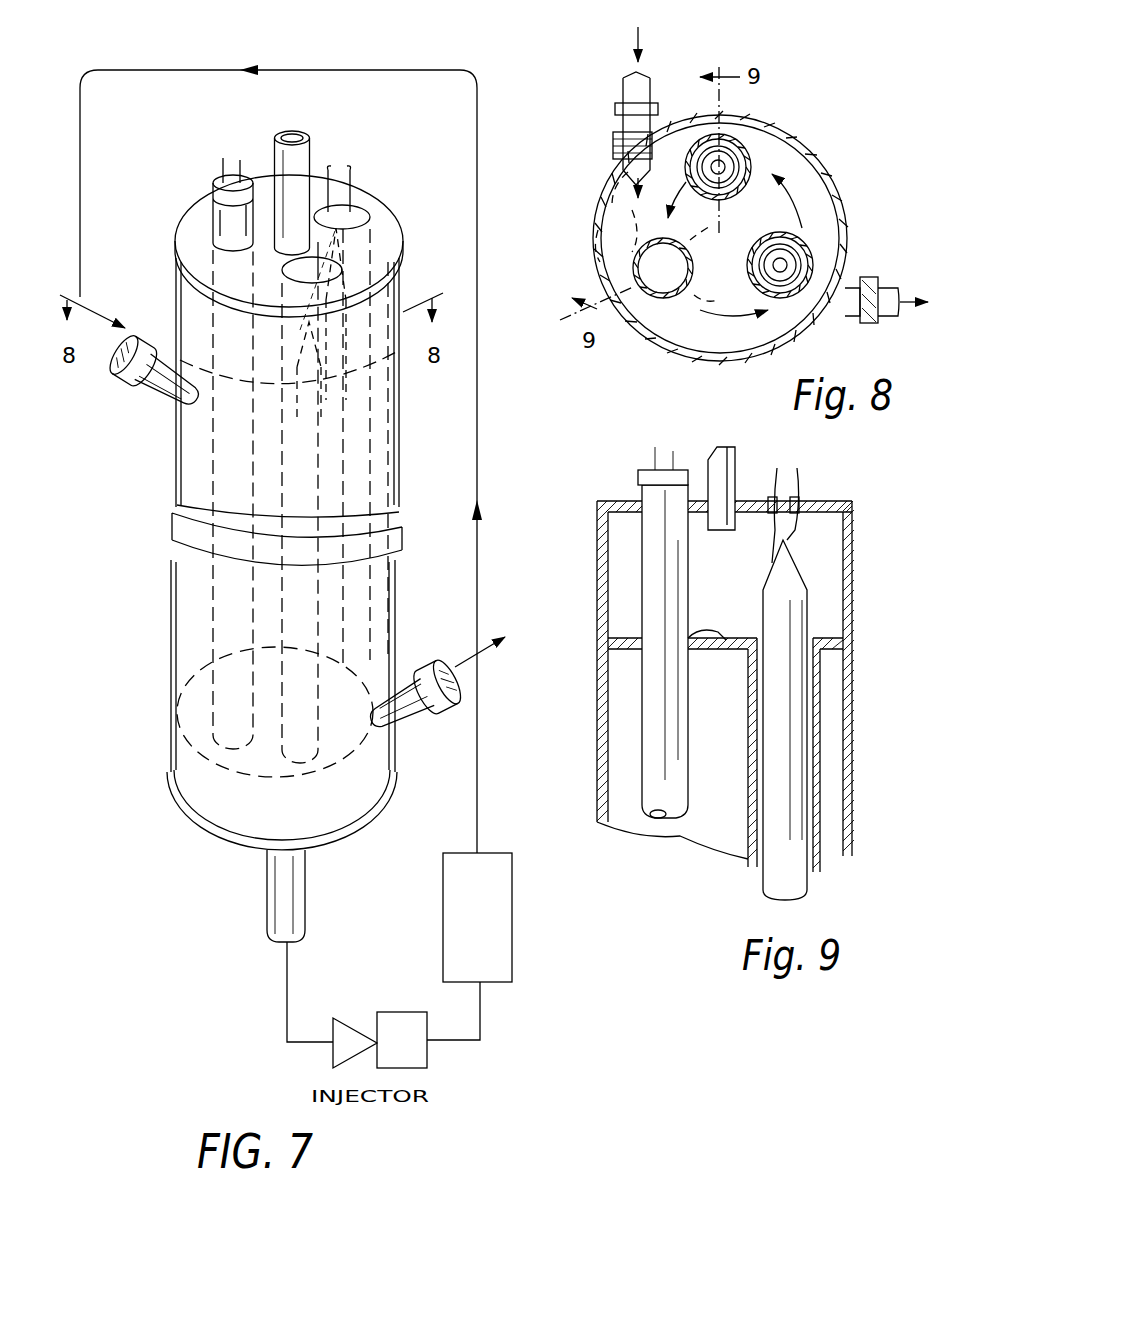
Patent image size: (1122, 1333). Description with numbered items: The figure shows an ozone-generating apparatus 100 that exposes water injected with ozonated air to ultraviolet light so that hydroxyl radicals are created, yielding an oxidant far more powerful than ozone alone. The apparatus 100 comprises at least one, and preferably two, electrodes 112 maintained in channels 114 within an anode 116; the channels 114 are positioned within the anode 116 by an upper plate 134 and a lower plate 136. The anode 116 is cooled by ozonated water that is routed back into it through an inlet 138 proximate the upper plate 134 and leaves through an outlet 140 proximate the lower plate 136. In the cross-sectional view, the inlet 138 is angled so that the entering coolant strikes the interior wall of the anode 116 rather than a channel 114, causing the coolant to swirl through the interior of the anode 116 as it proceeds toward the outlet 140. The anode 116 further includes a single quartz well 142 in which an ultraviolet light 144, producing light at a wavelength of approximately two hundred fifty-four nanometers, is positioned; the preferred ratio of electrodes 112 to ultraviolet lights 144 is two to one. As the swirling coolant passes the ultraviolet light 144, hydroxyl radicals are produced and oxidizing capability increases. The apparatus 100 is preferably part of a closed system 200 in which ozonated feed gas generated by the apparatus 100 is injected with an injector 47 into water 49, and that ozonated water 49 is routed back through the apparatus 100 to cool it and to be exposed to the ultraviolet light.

In FIG. 7, the closed system 200 is at (284, 56).
In FIG. 8, the apparatus 100 is at (816, 108).
In FIG. 7, the ultraviolet light 144 is at (215, 200).
In FIG. 9, the ultraviolet light 144 is at (637, 476).
In FIG. 7, the inlet 138 is at (140, 330).
In FIG. 8, the inlet 138 is at (620, 98).
In FIG. 7, the channels 114 is at (333, 277).
In FIG. 7, the upper plate 134 is at (372, 288).
In FIG. 9, the upper plate 134 is at (716, 632).
In FIG. 7, the electrodes 112 is at (350, 368).
In FIG. 9, the electrodes 112 is at (822, 605).
In FIG. 7, the anode 116 is at (160, 480).
In FIG. 8, the anode 116 is at (858, 203).
In FIG. 9, the anode 116 is at (872, 757).
In FIG. 7, the outlet 140 is at (436, 656).
In FIG. 8, the outlet 140 is at (873, 320).
In FIG. 7, the lower plate 136 is at (365, 757).
In FIG. 8, the quartz well 142 is at (650, 300).
In FIG. 7, the water 49 is at (514, 917).
In FIG. 7, the injector 47 is at (400, 1012).